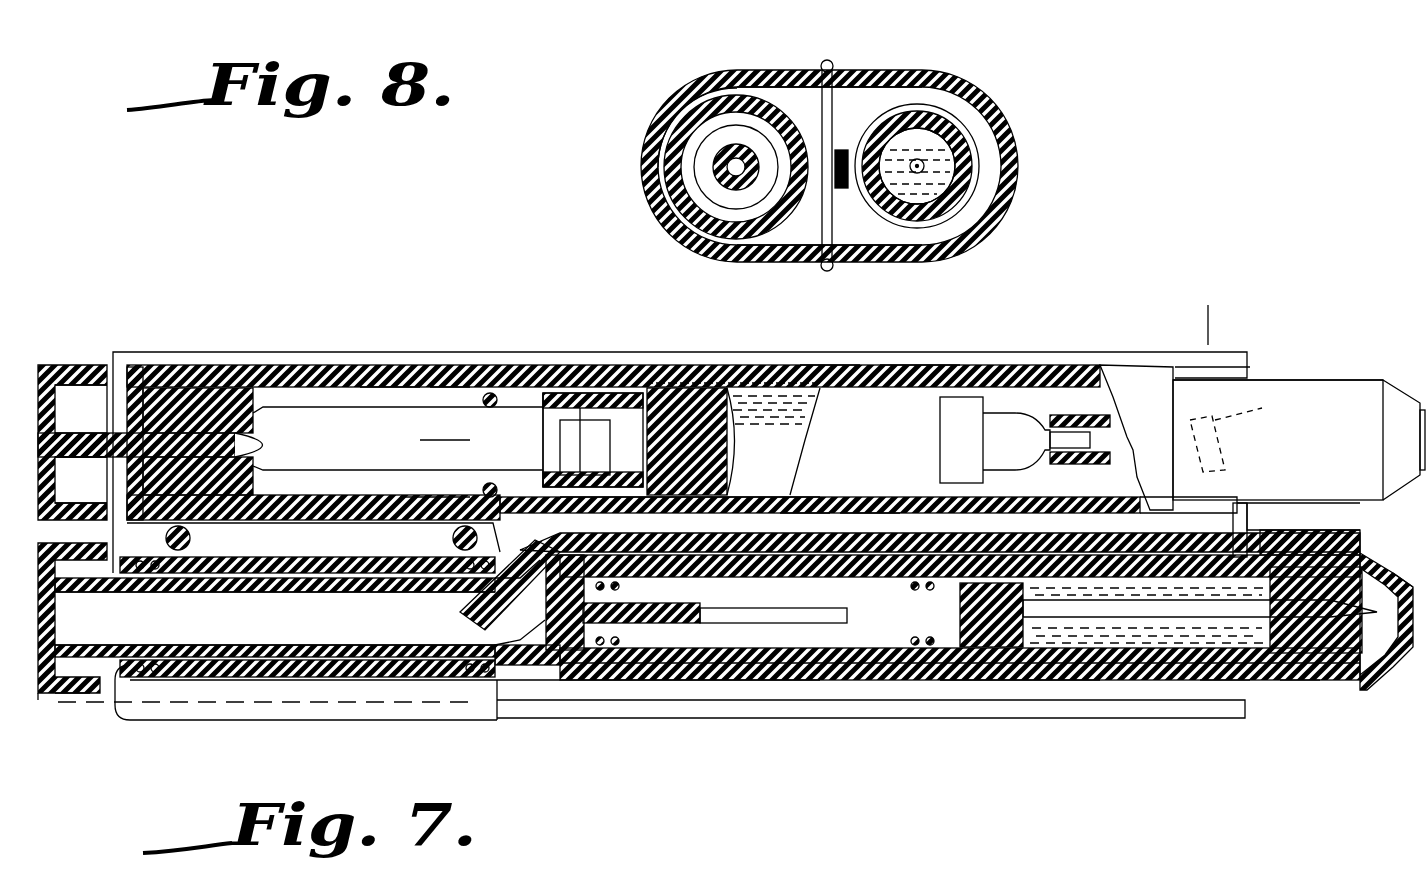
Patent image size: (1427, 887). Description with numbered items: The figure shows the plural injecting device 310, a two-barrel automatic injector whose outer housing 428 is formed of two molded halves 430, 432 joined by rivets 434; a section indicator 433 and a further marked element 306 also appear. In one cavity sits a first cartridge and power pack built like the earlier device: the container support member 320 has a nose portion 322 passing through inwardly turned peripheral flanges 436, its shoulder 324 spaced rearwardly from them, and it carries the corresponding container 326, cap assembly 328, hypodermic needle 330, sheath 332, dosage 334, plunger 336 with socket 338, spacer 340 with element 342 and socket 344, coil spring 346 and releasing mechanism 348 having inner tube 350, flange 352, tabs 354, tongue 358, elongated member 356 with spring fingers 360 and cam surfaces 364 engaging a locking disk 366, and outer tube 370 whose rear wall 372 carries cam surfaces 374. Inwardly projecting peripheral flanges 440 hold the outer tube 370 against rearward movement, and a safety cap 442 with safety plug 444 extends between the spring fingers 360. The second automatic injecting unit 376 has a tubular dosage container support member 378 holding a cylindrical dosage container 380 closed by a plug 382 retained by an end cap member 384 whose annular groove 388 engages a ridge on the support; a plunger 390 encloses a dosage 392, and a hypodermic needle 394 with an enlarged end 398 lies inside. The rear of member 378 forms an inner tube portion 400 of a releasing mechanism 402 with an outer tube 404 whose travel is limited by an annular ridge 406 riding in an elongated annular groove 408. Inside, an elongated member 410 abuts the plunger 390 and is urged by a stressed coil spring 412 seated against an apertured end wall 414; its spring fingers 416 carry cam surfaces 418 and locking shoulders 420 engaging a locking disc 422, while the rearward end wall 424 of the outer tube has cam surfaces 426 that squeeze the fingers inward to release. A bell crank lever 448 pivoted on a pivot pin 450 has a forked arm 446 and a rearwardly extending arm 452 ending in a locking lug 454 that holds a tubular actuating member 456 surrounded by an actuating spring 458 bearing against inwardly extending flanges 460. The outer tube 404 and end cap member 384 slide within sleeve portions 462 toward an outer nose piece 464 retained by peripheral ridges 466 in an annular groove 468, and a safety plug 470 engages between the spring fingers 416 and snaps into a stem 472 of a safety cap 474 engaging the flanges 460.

In FIG. 7, the space 306 is at (1275, 555).
In FIG. 7, the plural injecting device 310 is at (672, 340).
In FIG. 7, the container support member 320 is at (1075, 338).
In FIG. 8, the nose portion 322 is at (695, 130).
In FIG. 7, the nose portion 322 is at (1355, 380).
In FIG. 8, the shoulder 324 is at (665, 152).
In FIG. 7, the shoulder 324 is at (1170, 412).
In FIG. 7, the seal 326 is at (752, 382).
In FIG. 7, the valve body 328 is at (968, 405).
In FIG. 8, the valve stem 330 is at (710, 178).
In FIG. 7, the valve stem 330 is at (1108, 420).
In FIG. 8, the passage 332 is at (730, 165).
In FIG. 7, the passage 332 is at (1200, 447).
In FIG. 7, the fluid chamber 334 is at (825, 412).
In FIG. 7, the piston seal 336 is at (769, 441).
In FIG. 7, the piston 338 is at (735, 432).
In FIG. 7, the piston head 340 is at (550, 395).
In FIG. 7, the piston rod end 342 is at (652, 440).
In FIG. 7, the screw 344 is at (540, 418).
In FIG. 7, the end cap 346 is at (215, 395).
In FIG. 7, the upper housing 348 is at (328, 362).
In FIG. 7, the housing wall 350 is at (447, 366).
In FIG. 7, the plunger rod 352 is at (253, 465).
In FIG. 7, the screw 354 is at (470, 396).
In FIG. 7, the elongated member 356 is at (452, 444).
In FIG. 7, the piston flange 358 is at (592, 395).
In FIG. 7, the spring fingers 360 is at (272, 428).
In FIG. 7, the handle lower wall 364 is at (150, 493).
In FIG. 7, the handle upper wall 366 is at (150, 418).
In FIG. 7, the outer tube 370 is at (400, 337).
In FIG. 7, the rear wall 372 is at (180, 372).
In FIG. 7, the handle web 374 is at (125, 460).
In FIG. 7, the second automatic injecting unit 376 is at (850, 684).
In FIG. 8, the tubular dosage container support member 378 is at (832, 75).
In FIG. 7, the tubular dosage container support member 378 is at (1048, 680).
In FIG. 8, the cylindrical dosage container 380 is at (920, 72).
In FIG. 7, the cylindrical dosage container 380 is at (1112, 672).
In FIG. 7, the plug 382 is at (1340, 700).
In FIG. 7, the end cap member 384 is at (1345, 530).
In FIG. 7, the annular groove 388 is at (1308, 700).
In FIG. 8, the plunger 390 is at (985, 183).
In FIG. 7, the plunger 390 is at (985, 680).
In FIG. 8, the dosage 392 is at (925, 105).
In FIG. 7, the dosage 392 is at (1135, 517).
In FIG. 8, the hypodermic needle 394 is at (965, 150).
In FIG. 7, the hypodermic needle 394 is at (1183, 625).
In FIG. 7, the enlarged end 398 is at (1040, 632).
In FIG. 7, the inner tube portion 400 is at (675, 680).
In FIG. 7, the releasing mechanism 402 is at (763, 684).
In FIG. 8, the outer tube 404 is at (945, 232).
In FIG. 7, the outer tube 404 is at (600, 680).
In FIG. 7, the annular ridge 406 is at (1232, 700).
In FIG. 7, the elongated annular groove 408 is at (1213, 700).
In FIG. 7, the elongated member 410 is at (892, 680).
In FIG. 7, the stressed coil spring 412 is at (912, 605).
In FIG. 7, the apertured end wall 414 is at (572, 655).
In FIG. 7, the spring fingers 416 is at (698, 556).
In FIG. 7, the cam surfaces 418 is at (548, 520).
In FIG. 7, the locking shoulders 420 is at (485, 600).
In FIG. 7, the locking disc 422 is at (480, 625).
In FIG. 7, the rearward end wall 424 is at (520, 680).
In FIG. 7, the cam surfaces 426 is at (432, 498).
In FIG. 7, the outer housing 428 is at (908, 352).
In FIG. 8, the molded half 430 is at (985, 90).
In FIG. 8, the molded half 432 is at (995, 228).
In FIG. 7, the molded half 432 is at (810, 358).
In FIG. 7, the section line 433 is at (1222, 348).
In FIG. 7, the rivets 434 is at (192, 540).
In FIG. 7, the inwardly turned peripheral flanges 436 is at (1253, 366).
In FIG. 7, the inwardly projecting peripheral flanges 440 is at (112, 395).
In FIG. 7, the safety cap 442 is at (63, 367).
In FIG. 7, the safety plug 444 is at (243, 395).
In FIG. 8, the forked arm 446 is at (760, 78).
In FIG. 7, the forked arm 446 is at (1299, 440).
In FIG. 8, the bell crank lever 448 is at (815, 215).
In FIG. 7, the bell crank lever 448 is at (865, 515).
In FIG. 8, the pivot pin 450 is at (772, 262).
In FIG. 7, the pivot pin 450 is at (1233, 510).
In FIG. 7, the rearwardly extending arm 452 is at (838, 514).
In FIG. 7, the locking lug 454 is at (585, 480).
In FIG. 7, the tubular actuating member 456 is at (385, 665).
In FIG. 7, the actuating spring 458 is at (190, 680).
In FIG. 7, the inwardly extending flanges 460 is at (100, 680).
In FIG. 7, the sleeve portions 462 is at (1370, 575).
In FIG. 7, the outer nose piece 464 is at (1395, 688).
In FIG. 7, the peripheral ridges 466 is at (1290, 700).
In FIG. 7, the annular groove 468 is at (1300, 700).
In FIG. 7, the safety plug 470 is at (448, 605).
In FIG. 7, the stem 472 is at (85, 695).
In FIG. 7, the safety cap 474 is at (62, 700).